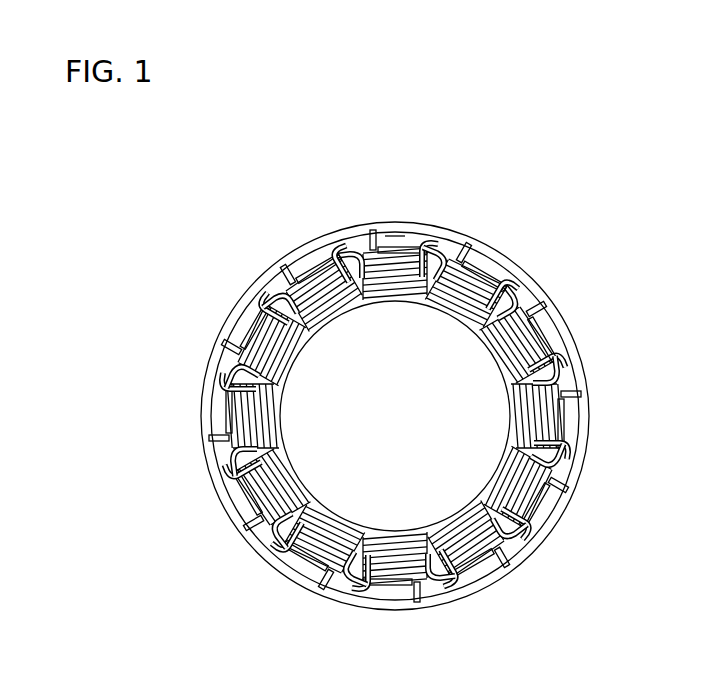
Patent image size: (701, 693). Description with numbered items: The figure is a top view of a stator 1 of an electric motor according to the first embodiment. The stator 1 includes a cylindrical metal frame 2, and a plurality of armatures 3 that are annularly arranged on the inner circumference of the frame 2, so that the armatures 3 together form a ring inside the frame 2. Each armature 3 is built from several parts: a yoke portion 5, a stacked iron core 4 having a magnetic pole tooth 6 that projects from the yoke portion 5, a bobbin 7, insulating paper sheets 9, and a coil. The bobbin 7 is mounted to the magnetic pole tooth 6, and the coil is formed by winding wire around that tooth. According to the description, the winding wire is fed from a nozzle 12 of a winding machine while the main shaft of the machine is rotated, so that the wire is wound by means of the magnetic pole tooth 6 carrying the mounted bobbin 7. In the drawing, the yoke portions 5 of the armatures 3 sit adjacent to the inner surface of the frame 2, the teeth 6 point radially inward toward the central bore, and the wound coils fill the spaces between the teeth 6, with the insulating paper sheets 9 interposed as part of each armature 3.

The stator 1 is at (236, 275).
The frame 2 is at (567, 364).
The armature 3 is at (392, 240).
The stacked iron core 4 is at (366, 243).
The yoke portion 5 is at (361, 247).
The magnetic pole tooth 6 is at (303, 345).
The bobbin 7 is at (533, 333).
The insulating paper sheet 9 is at (431, 270).
The nozzle 12 is at (488, 287).